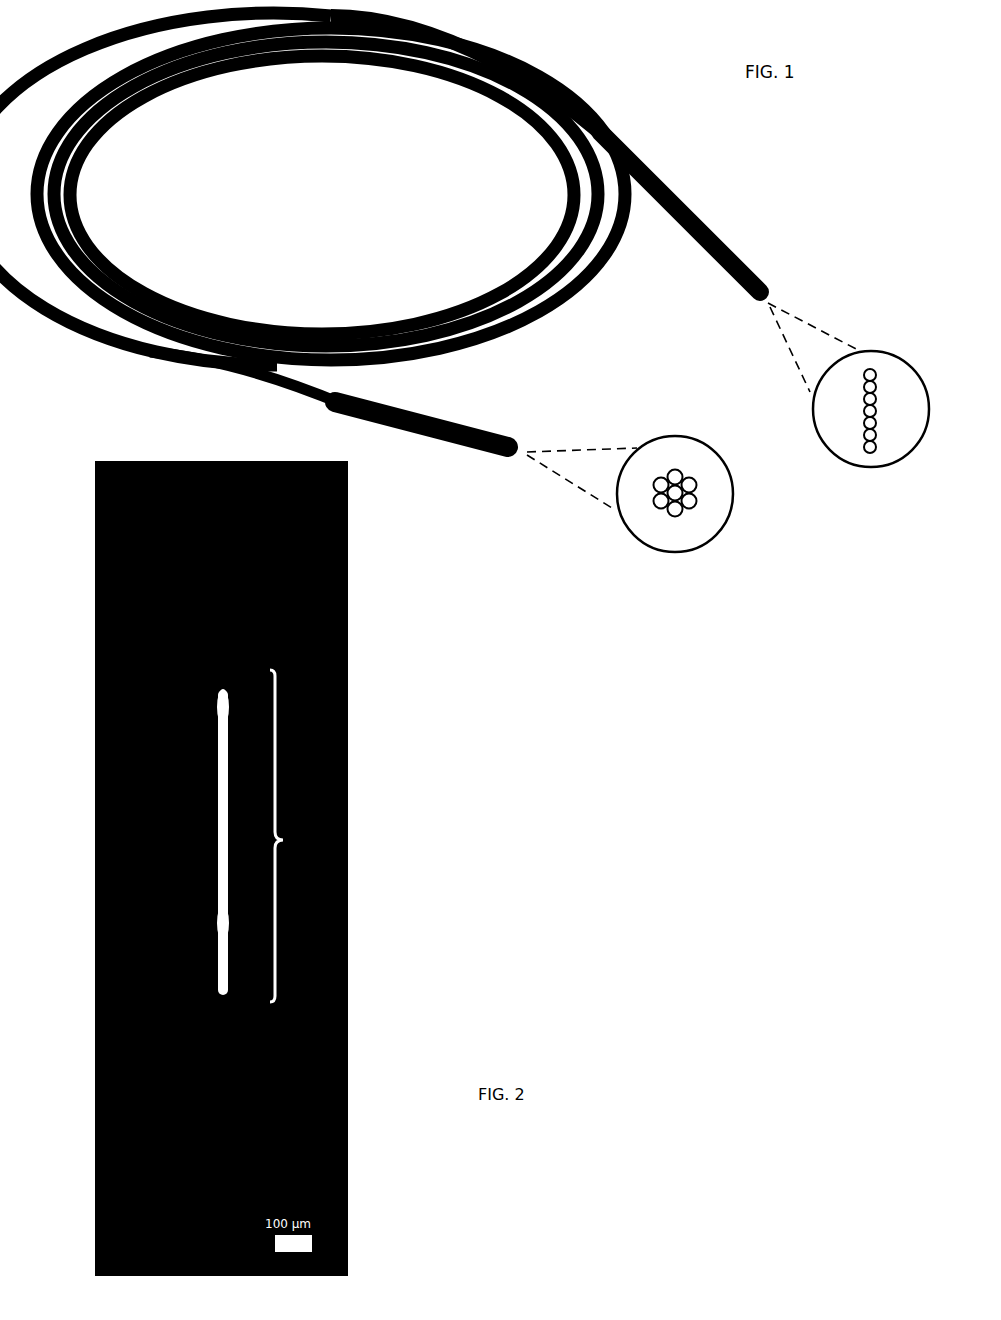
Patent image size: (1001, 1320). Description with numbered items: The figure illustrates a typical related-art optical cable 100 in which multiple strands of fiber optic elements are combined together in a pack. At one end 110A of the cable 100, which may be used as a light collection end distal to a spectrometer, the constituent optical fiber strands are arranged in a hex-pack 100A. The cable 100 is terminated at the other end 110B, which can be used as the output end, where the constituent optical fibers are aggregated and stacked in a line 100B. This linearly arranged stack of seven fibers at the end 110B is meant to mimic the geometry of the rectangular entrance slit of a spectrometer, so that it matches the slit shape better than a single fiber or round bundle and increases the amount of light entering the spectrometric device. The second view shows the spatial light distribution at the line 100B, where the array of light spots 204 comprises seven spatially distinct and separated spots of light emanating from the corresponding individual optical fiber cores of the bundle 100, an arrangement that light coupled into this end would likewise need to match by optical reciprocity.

In FIG. 1, the optical cable 100 is at (572, 64).
In FIG. 1, the end 110A is at (516, 420).
In FIG. 1, the end 110B is at (768, 260).
In FIG. 1, the hex-pack 100A is at (690, 520).
In FIG. 1, the line 100B is at (885, 422).
In FIG. 2, the array of fiber output light spots 204 is at (273, 836).